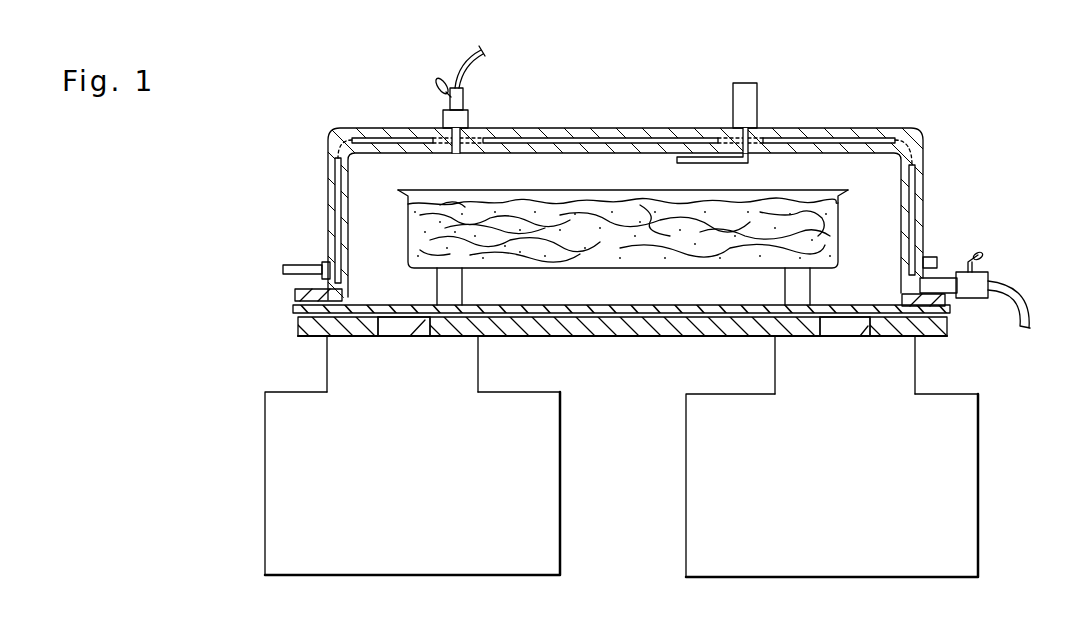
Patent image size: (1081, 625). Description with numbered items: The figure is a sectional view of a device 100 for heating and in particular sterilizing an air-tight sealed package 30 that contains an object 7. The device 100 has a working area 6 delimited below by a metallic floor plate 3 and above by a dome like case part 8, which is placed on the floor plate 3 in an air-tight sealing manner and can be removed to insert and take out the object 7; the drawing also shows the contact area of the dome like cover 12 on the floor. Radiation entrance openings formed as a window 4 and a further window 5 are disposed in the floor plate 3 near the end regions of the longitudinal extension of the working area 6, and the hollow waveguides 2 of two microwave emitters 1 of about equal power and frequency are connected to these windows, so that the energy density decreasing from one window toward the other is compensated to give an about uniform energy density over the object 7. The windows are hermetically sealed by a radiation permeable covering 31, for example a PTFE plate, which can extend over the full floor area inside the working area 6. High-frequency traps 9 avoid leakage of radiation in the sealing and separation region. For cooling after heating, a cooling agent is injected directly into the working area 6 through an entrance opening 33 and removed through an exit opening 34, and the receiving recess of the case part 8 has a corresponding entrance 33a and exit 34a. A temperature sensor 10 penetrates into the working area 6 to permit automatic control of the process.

The device 100 is at (928, 86).
The microwave emitter 1 is at (540, 500).
The hollow waveguide 2 is at (467, 383).
The floor plate 3 is at (592, 324).
The window 4 is at (410, 322).
The window 5 is at (857, 326).
The working area 6 is at (807, 167).
The object 7 is at (827, 242).
The dome like case part 8 is at (913, 139).
The high-frequency trap 9 is at (282, 314).
The temperature sensor 10 is at (747, 113).
The dome like cover 12 is at (950, 173).
The air-tight sealed package 30 is at (550, 198).
The radiation permeable covering 31 is at (607, 308).
The entrance opening 33 is at (432, 99).
The entrance 33a is at (310, 258).
The exit opening 34 is at (1006, 270).
The exit 34a is at (940, 246).